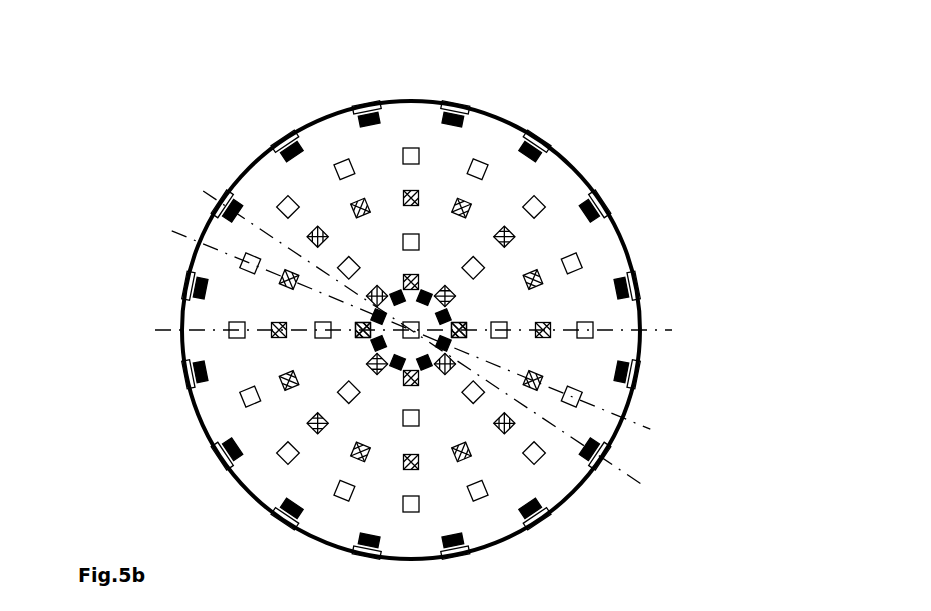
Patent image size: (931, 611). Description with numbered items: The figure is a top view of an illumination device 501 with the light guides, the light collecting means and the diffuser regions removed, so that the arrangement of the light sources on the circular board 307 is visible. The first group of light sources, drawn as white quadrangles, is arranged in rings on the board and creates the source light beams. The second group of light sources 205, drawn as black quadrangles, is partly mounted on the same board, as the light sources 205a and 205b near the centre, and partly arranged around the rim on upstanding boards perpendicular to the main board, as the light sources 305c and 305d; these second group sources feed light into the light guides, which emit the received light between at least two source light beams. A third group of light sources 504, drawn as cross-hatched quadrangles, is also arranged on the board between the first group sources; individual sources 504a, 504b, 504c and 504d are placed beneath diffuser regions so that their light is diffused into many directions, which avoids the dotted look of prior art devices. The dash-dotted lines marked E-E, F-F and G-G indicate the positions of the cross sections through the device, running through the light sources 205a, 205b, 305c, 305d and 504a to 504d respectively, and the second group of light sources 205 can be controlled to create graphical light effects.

The illumination device 501 is at (166, 75).
The wafer 307 is at (327, 133).
The third group of light sources 504 is at (413, 278).
The light source 504a is at (272, 331).
The light source 504b is at (354, 334).
The light source 504c is at (462, 326).
The light source 504d is at (446, 343).
The second group of light sources 205 is at (473, 270).
The light source 205a is at (357, 325).
The light source 205b is at (463, 334).
The light source 305c is at (214, 208).
The light source 305d is at (600, 462).